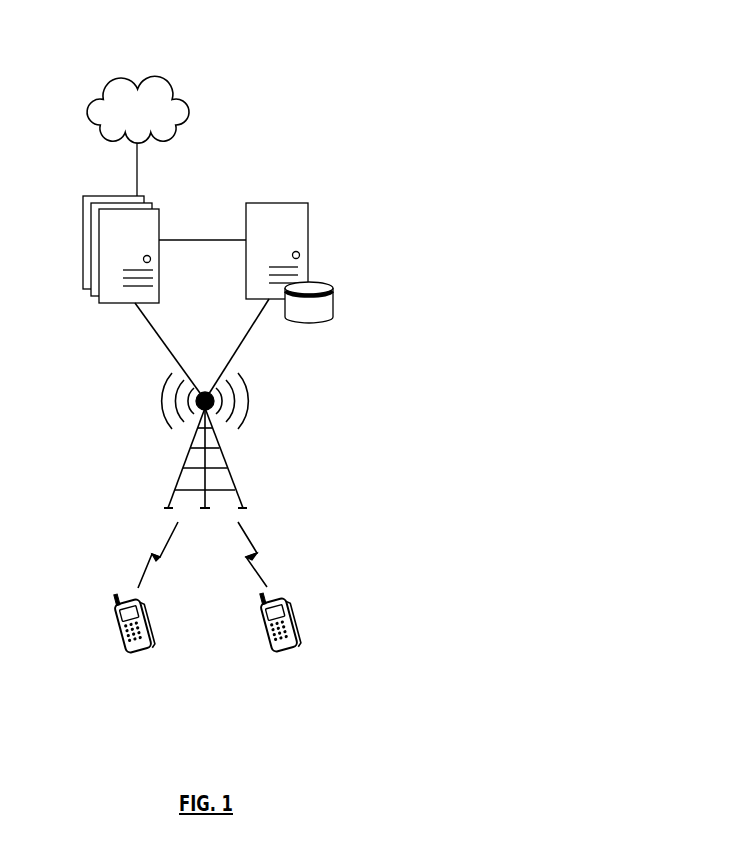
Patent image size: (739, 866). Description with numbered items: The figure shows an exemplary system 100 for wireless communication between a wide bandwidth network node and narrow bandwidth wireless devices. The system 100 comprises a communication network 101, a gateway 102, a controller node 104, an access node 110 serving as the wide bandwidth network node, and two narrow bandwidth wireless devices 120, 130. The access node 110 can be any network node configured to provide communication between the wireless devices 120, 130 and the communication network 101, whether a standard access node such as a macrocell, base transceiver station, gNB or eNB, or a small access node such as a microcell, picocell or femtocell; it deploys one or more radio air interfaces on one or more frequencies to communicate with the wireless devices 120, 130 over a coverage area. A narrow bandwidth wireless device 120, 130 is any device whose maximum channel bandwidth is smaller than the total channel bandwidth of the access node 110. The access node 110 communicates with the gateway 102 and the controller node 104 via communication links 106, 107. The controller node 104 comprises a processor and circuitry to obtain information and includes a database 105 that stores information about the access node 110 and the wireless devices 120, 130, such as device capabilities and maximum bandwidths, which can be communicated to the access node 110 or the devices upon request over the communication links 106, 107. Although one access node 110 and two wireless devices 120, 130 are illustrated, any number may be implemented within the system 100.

The system 100 is at (306, 60).
The communication network 101 is at (121, 122).
The gateway 102 is at (102, 195).
The controller node 104 is at (308, 203).
The database 105 is at (332, 286).
The communication link 106 is at (246, 338).
The communication link 107 is at (150, 326).
The access node 110 is at (188, 460).
The narrow bandwidth wireless device 120 is at (120, 607).
The narrow bandwidth wireless device 130 is at (289, 608).